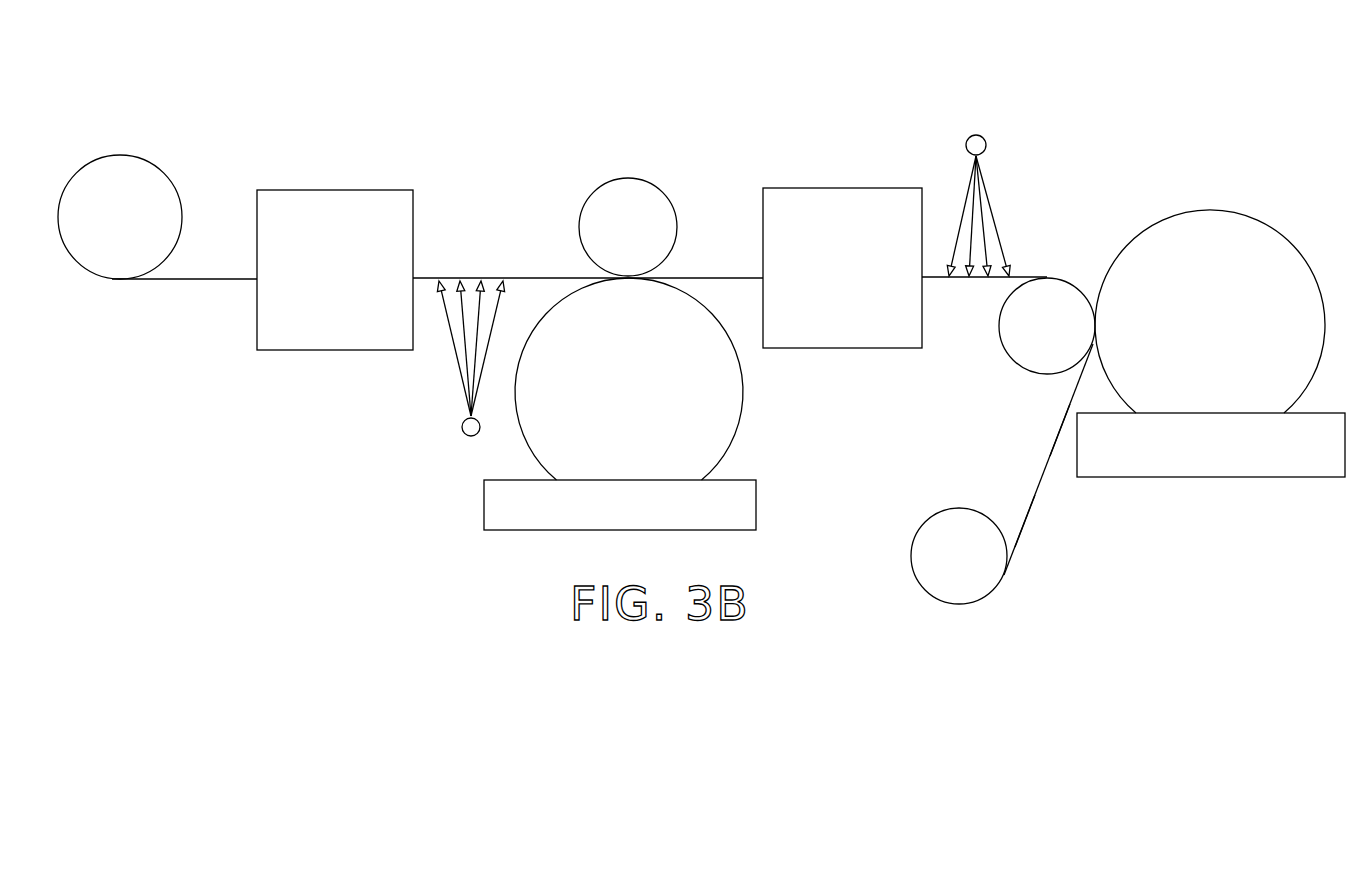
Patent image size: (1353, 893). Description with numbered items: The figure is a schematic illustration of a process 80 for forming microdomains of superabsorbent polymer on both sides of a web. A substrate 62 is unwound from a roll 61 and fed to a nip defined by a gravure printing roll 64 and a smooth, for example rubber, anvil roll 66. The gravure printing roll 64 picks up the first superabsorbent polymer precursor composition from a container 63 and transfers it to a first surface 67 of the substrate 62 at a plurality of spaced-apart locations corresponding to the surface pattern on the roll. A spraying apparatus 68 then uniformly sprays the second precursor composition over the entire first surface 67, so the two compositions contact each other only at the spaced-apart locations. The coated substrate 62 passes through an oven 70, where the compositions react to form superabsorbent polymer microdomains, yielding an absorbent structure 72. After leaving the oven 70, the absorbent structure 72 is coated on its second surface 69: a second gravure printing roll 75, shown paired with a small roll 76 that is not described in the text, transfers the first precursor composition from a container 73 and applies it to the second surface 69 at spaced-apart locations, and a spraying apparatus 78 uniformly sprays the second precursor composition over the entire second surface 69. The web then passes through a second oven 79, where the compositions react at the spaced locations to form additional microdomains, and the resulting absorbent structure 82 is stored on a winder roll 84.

The process 80 is at (1044, 46).
The winder roll 84 is at (122, 155).
The absorbent structure 82 is at (195, 276).
The second oven 79 is at (328, 190).
The spraying apparatus 78 is at (462, 432).
The nip roller 76 is at (621, 178).
The second gravure printing roll 75 is at (745, 412).
The container 73 is at (758, 474).
The absorbent structure 72 is at (712, 276).
The oven 70 is at (850, 188).
The spraying apparatus 68 is at (986, 137).
The anvil roll 66 is at (1001, 337).
The gravure printing roll 64 is at (1233, 210).
The container 63 is at (1340, 413).
The first surface 67 is at (1033, 503).
The second surface 69 is at (1042, 466).
The substrate 62 is at (1020, 533).
The roll 61 is at (912, 540).